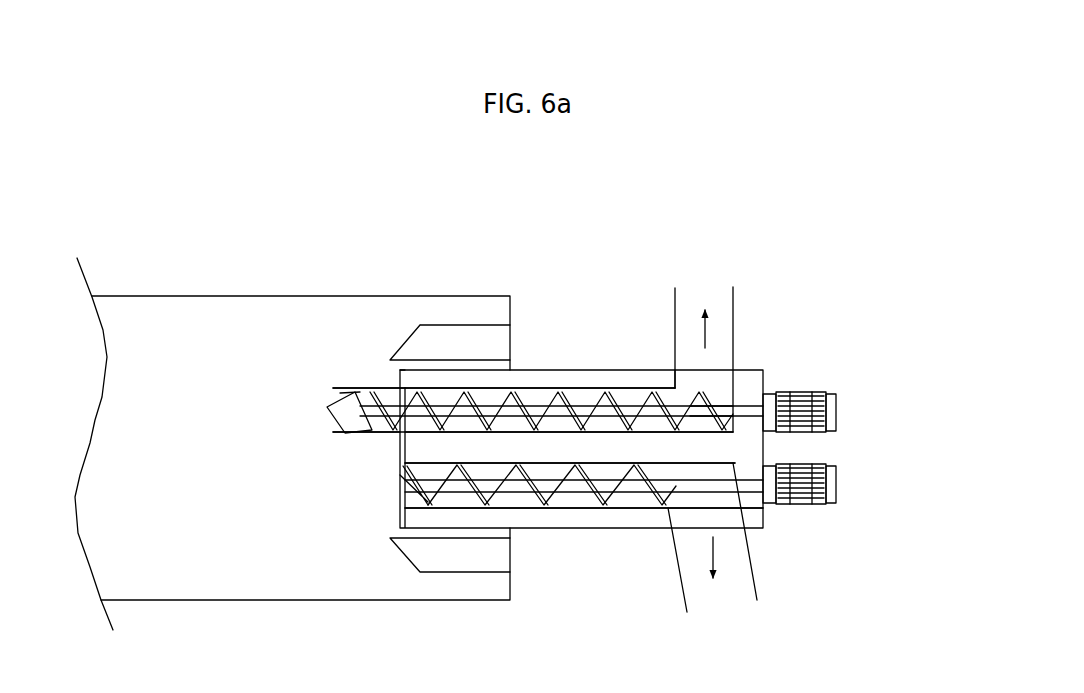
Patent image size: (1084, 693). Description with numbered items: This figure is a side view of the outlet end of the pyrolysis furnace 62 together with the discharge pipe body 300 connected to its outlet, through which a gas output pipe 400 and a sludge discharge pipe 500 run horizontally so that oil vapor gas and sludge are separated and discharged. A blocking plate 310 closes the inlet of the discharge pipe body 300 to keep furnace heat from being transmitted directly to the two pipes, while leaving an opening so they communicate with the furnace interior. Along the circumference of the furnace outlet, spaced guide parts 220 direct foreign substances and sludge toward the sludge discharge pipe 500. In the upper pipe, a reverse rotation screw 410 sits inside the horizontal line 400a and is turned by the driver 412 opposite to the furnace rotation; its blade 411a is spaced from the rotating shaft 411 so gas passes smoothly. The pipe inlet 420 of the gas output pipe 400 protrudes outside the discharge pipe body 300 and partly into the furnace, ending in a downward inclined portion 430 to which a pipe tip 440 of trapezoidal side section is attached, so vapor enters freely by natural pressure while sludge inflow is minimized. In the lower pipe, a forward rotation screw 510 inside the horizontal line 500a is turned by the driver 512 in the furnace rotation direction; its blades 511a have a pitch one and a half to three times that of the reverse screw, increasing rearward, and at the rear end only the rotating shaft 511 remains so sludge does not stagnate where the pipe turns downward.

The pyrolysis furnace 62 is at (292, 423).
The guide part 220 is at (450, 299).
The discharge pipe body 300 is at (548, 378).
The blocking plate 310 is at (398, 382).
The gas output pipe 400 is at (755, 344).
The horizontal line 400a is at (569, 366).
The reverse rotation screw 410 is at (646, 331).
The rotating shaft 411 is at (623, 382).
The blade 411a is at (754, 368).
The driver 412 is at (837, 408).
The pipe inlet 420 is at (393, 428).
The inclined portion 430 is at (340, 393).
The pipe tip 440 is at (312, 520).
The sludge discharge pipe 500 is at (677, 555).
The horizontal line 500a is at (584, 524).
The forward rotation screw 510 is at (552, 559).
The rotating shaft 511 is at (772, 488).
The blade 511a is at (375, 559).
The driver 512 is at (837, 483).